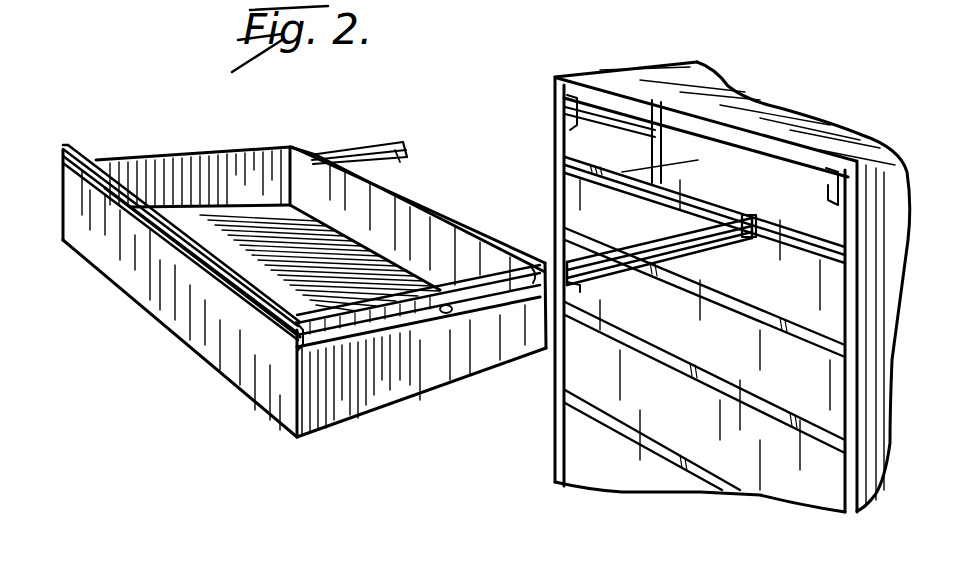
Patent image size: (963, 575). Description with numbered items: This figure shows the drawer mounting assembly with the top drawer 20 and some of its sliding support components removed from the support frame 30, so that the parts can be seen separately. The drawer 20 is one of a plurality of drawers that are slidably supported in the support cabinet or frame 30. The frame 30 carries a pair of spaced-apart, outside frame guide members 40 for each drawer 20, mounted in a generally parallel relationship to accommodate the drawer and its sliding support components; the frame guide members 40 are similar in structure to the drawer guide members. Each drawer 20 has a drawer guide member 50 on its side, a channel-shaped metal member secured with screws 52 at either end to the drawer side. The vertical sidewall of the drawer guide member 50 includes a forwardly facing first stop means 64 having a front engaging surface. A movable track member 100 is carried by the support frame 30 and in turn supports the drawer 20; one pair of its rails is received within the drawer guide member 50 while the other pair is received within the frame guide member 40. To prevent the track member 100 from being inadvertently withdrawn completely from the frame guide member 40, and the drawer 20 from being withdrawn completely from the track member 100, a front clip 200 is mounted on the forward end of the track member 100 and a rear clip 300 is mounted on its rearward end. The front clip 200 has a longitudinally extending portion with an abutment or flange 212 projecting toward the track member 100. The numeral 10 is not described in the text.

The cabinet slide member 10 is at (548, 248).
The drawer 20 is at (272, 422).
The support frame 30 is at (633, 78).
The frame guide member 40 is at (572, 120).
The drawer guide member 50 is at (356, 345).
The screws 52 is at (296, 348).
The first stop means 64 is at (462, 301).
The movable track member 100 is at (334, 148).
The front clip 200 is at (585, 285).
The abutment or flange 212 is at (398, 160).
The rear clip 300 is at (410, 143).